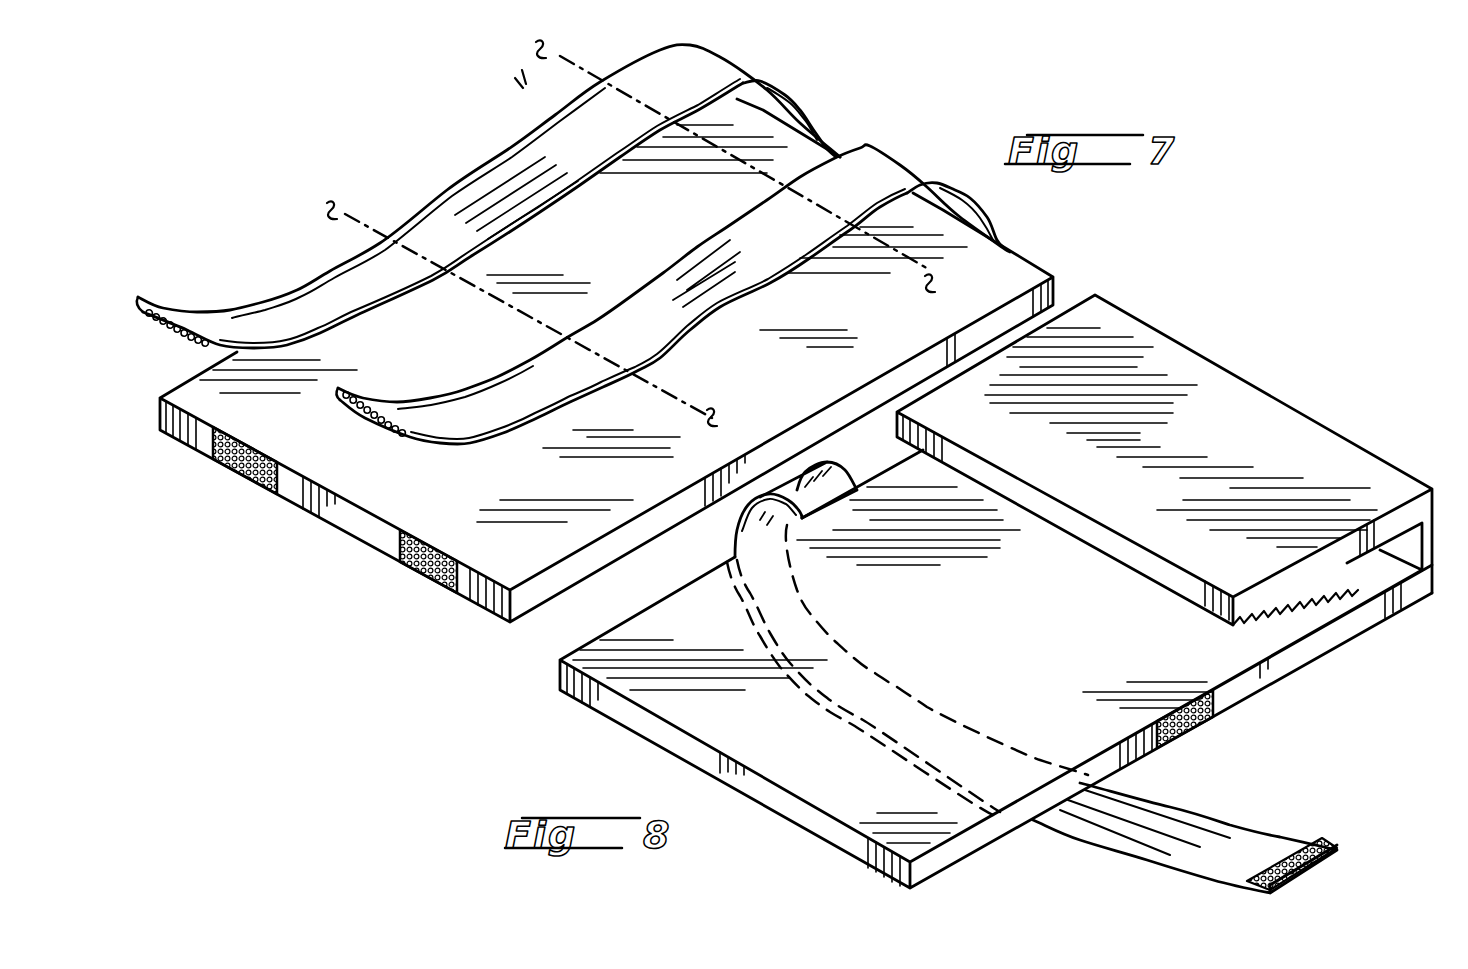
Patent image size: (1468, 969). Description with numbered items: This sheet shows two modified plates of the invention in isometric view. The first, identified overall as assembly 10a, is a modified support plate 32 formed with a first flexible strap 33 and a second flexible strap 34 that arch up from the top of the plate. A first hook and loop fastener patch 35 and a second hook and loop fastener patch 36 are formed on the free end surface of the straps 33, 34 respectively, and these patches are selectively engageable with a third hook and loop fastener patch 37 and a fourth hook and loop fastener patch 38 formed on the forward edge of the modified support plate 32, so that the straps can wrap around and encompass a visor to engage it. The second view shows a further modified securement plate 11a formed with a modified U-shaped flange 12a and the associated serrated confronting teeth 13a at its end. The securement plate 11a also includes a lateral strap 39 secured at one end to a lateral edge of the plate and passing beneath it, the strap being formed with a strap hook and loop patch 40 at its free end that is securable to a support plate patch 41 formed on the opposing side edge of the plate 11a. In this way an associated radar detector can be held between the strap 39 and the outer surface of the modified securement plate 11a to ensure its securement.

In FIG. 7, the splint assembly 10a is at (906, 136).
In FIG. 7, the modified support plate 32 is at (786, 388).
In FIG. 7, the first flexible strap 33 is at (560, 130).
In FIG. 7, the second flexible strap 34 is at (692, 262).
In FIG. 7, the first hook and loop fastener patch 35 is at (174, 325).
In FIG. 7, the second hook and loop fastener patch 36 is at (396, 431).
In FIG. 7, the third hook and loop fastener patch 37 is at (257, 472).
In FIG. 7, the fourth hook and loop fastener patch 38 is at (416, 562).
In FIG. 8, the modified securement plate 11a is at (1027, 614).
In FIG. 8, the modified U shaped flange 12a is at (1398, 517).
In FIG. 8, the serrated confronting teeth 13a is at (1295, 618).
In FIG. 8, the lateral strap 39 is at (1190, 821).
In FIG. 8, the strap hook and loop patch 40 is at (1328, 848).
In FIG. 8, the support plate patch 41 is at (1205, 717).